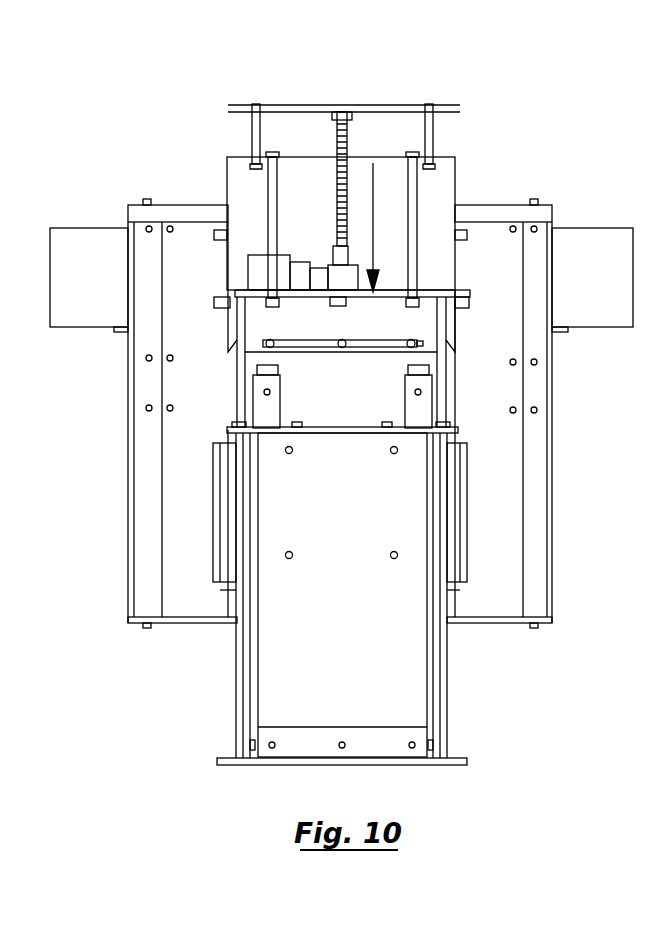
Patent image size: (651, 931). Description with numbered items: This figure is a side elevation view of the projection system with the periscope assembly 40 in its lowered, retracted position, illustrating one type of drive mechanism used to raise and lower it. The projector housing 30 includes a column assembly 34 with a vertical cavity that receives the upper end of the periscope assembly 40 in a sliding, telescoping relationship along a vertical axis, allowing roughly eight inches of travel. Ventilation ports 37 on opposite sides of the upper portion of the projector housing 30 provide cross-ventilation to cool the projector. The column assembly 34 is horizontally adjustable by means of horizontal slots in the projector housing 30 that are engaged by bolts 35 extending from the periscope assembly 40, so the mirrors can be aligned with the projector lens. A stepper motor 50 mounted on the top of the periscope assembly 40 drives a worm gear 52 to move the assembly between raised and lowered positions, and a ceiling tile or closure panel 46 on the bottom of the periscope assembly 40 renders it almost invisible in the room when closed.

The projector housing 30 is at (112, 446).
The column assembly 34 is at (455, 188).
The bolts 35 is at (408, 348).
The ventilation ports 37 is at (73, 255).
The periscope assembly 40 is at (220, 662).
The closure panel 46 is at (262, 766).
The stepper motor 50 is at (337, 278).
The worm gear 52 is at (335, 140).